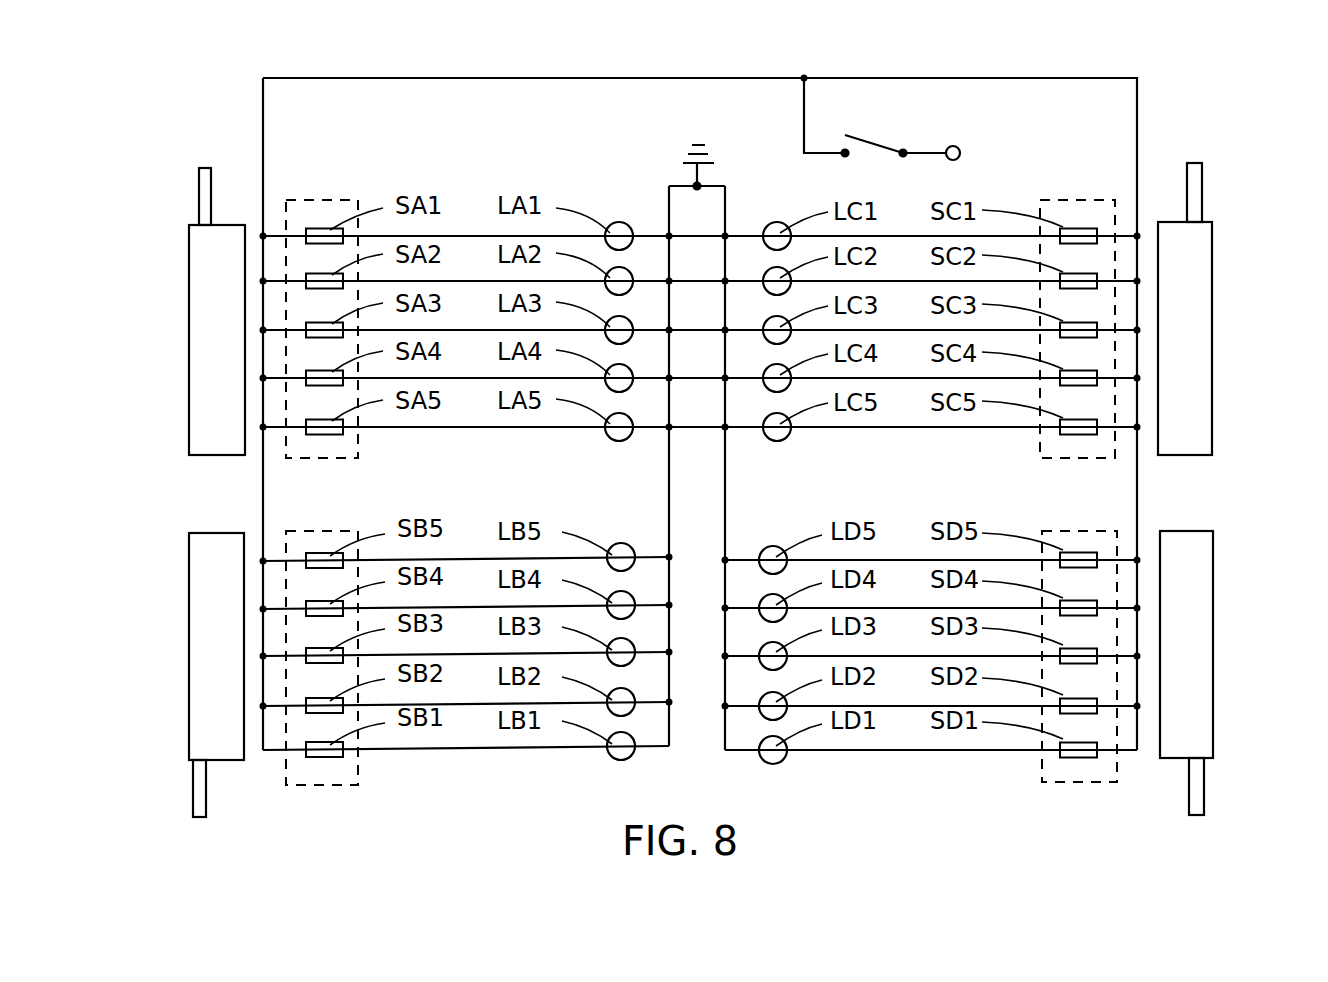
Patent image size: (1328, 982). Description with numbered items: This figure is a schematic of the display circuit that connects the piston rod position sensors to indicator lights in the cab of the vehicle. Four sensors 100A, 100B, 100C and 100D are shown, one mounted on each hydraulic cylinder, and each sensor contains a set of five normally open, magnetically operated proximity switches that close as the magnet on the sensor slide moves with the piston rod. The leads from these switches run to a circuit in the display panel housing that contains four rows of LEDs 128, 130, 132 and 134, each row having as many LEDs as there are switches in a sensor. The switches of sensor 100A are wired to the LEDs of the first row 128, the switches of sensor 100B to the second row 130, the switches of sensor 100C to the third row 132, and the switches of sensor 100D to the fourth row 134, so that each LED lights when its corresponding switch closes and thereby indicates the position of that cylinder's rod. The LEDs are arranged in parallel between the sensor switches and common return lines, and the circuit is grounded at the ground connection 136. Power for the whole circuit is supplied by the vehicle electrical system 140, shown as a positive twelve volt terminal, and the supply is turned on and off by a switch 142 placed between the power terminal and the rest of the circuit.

The row of LEDs 128 is at (614, 207).
The row of LEDs 130 is at (626, 532).
The row of LEDs 132 is at (777, 209).
The row of LEDs 134 is at (769, 532).
The ground connection 136 is at (695, 135).
The vehicle electrical system 140 is at (1017, 120).
The switch 142 is at (865, 125).
The piston rod position sensor 100A is at (190, 316).
The piston rod position sensor 100B is at (190, 620).
The piston rod position sensor 100C is at (1205, 287).
The piston rod position sensor 100D is at (1205, 658).